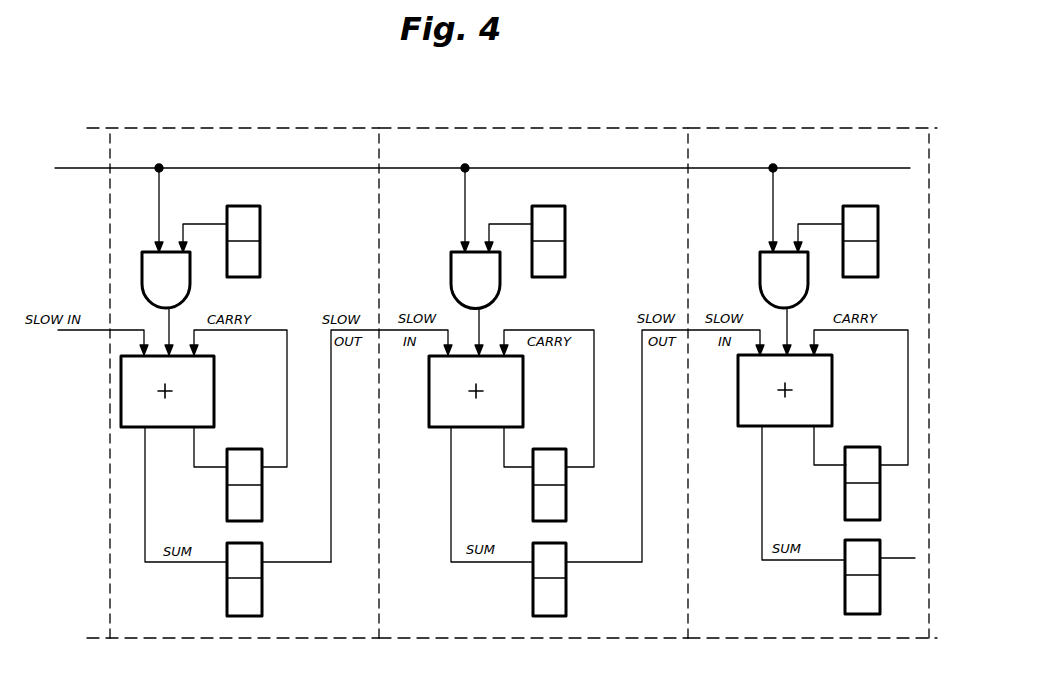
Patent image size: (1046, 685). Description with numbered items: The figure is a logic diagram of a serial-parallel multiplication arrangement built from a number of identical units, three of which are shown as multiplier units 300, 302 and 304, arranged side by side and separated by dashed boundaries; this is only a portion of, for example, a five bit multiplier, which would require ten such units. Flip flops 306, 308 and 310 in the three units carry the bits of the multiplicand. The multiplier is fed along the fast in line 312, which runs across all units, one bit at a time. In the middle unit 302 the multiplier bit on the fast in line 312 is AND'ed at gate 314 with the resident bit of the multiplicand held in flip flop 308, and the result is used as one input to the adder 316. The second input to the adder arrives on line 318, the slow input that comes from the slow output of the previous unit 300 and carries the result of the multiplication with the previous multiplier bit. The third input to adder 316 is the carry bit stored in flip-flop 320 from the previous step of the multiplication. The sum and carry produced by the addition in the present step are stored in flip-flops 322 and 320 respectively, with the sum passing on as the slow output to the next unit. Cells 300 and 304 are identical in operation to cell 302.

The multiplier unit 300 is at (278, 131).
The multiplier unit 302 is at (557, 127).
The multiplier unit 304 is at (832, 127).
The flip flop 306 is at (260, 221).
The flip flop 308 is at (565, 221).
The flip flop 310 is at (878, 215).
The fast in line 312 is at (137, 166).
The AND gate 314 is at (498, 298).
The adder 316 is at (524, 400).
The slow input line 318 is at (387, 332).
The carry flip-flop 320 is at (566, 491).
The sum flip-flop 322 is at (566, 598).